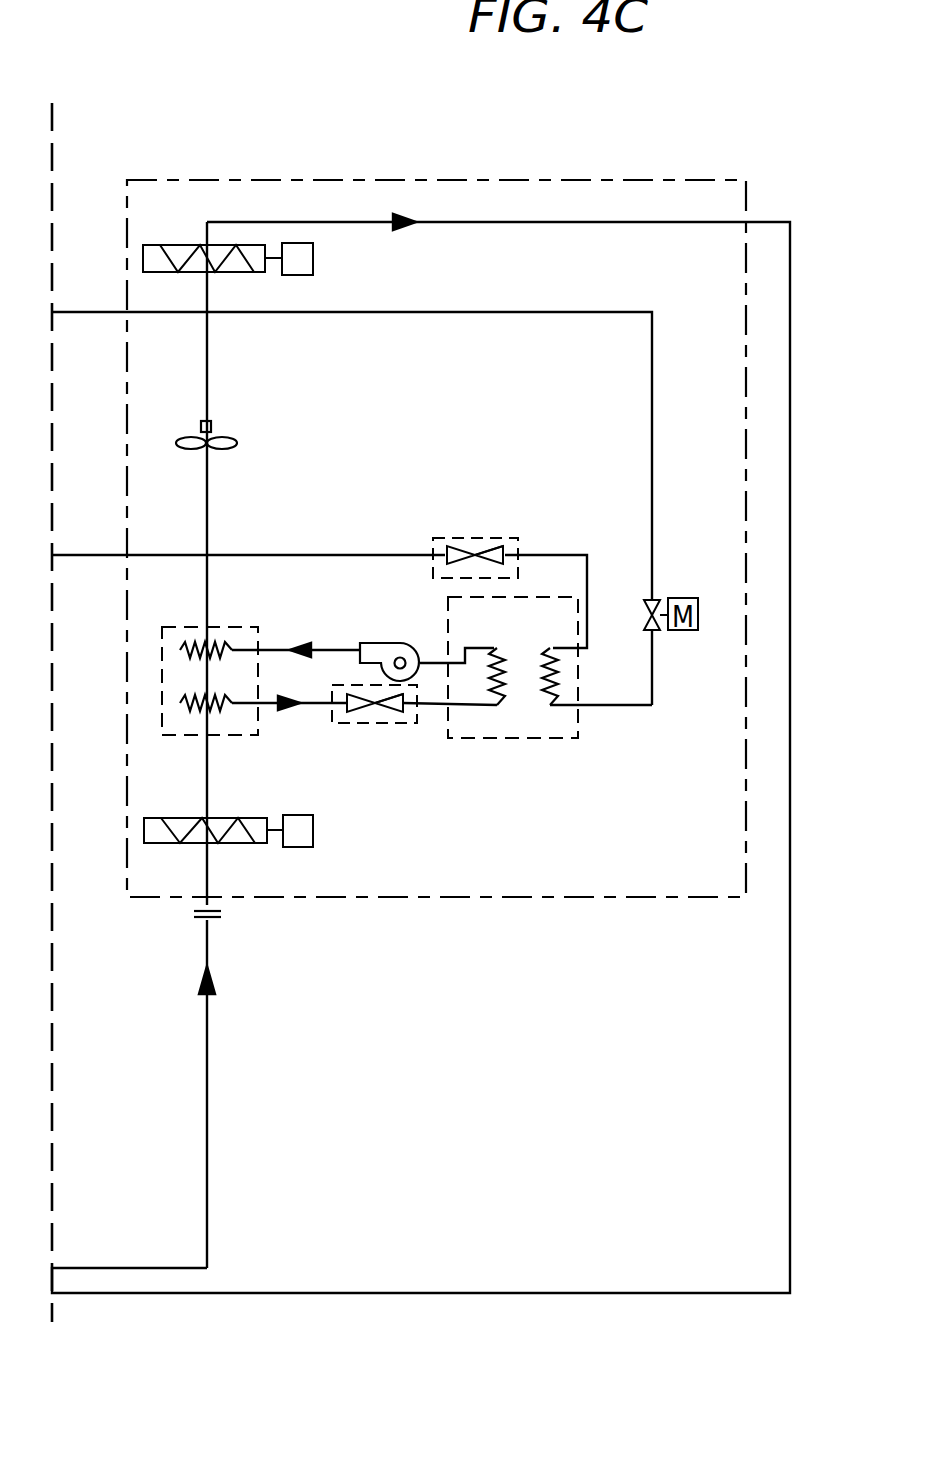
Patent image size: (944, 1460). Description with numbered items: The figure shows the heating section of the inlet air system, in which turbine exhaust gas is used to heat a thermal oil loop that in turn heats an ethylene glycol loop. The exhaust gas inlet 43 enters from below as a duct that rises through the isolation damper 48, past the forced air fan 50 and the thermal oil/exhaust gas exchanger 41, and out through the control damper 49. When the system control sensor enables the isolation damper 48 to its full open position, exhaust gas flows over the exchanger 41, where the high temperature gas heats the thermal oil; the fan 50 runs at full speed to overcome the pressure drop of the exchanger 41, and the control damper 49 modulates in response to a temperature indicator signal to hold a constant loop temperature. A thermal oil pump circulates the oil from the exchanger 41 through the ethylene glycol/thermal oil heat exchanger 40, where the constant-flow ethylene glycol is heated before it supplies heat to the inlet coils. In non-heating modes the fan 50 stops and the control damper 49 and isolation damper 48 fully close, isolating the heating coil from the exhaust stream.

The control damper 49 is at (172, 247).
The forced air fan 50 is at (235, 448).
The thermal oil/exhaust gas exchanger 41 is at (237, 627).
The ethylene glycol/thermal oil heat exchanger 40 is at (525, 738).
The isolation damper 48 is at (296, 815).
The exhaust gas inlet 43 is at (208, 1142).